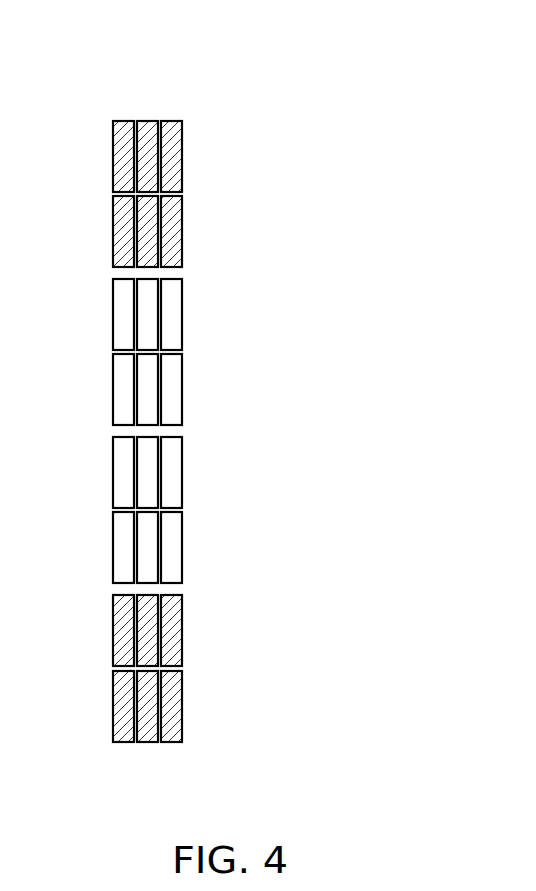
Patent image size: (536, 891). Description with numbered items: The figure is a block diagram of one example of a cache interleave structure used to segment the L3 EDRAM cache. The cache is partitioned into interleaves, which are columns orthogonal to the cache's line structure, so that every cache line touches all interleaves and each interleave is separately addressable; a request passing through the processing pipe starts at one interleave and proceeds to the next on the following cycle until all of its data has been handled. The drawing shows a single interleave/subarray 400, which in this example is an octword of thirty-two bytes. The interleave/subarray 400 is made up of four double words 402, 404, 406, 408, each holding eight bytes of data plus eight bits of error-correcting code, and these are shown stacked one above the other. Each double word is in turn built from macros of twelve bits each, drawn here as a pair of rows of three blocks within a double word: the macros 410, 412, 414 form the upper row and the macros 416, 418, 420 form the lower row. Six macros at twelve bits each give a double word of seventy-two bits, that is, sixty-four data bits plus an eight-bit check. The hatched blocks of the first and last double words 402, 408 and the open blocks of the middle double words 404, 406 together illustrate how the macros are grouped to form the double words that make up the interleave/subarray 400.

The interleave/subarray 400 is at (244, 388).
The double word 402 is at (193, 151).
The double word 404 is at (263, 277).
The double word 406 is at (263, 435).
The double word 408 is at (231, 667).
The macro 410 is at (123, 121).
The macro 412 is at (147, 121).
The macro 414 is at (166, 121).
The macro 416 is at (113, 220).
The macro 418 is at (138, 237).
The macro 420 is at (208, 231).